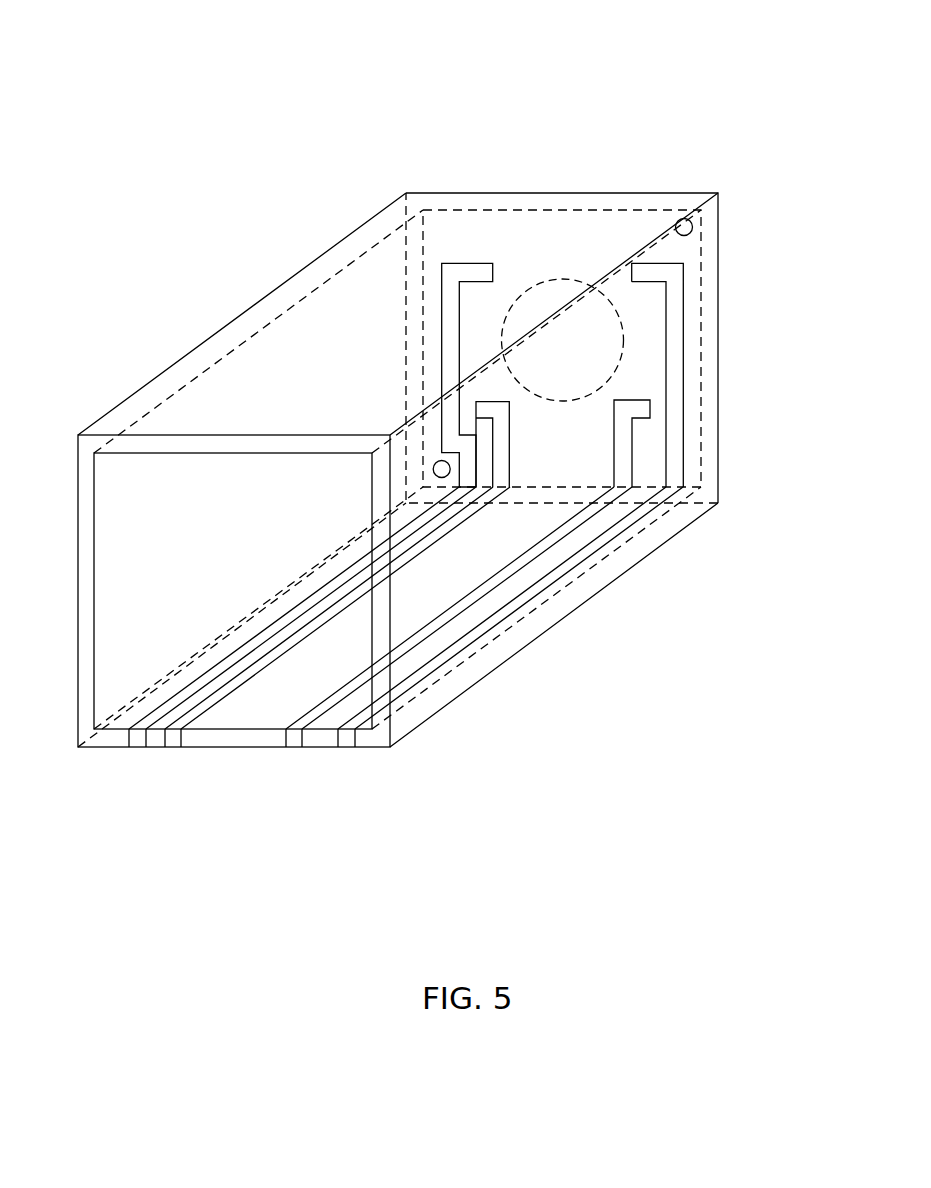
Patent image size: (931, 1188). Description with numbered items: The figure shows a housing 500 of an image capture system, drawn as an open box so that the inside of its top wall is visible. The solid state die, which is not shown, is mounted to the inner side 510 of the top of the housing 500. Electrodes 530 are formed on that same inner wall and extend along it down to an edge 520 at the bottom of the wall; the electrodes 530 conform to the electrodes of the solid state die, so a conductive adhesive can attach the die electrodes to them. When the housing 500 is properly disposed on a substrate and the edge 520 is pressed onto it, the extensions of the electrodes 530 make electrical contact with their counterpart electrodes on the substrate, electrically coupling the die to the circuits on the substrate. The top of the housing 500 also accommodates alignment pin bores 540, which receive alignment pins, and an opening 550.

The housing 500 is at (302, 92).
The inner side 510 is at (545, 238).
The edge 520 is at (222, 743).
The electrodes 530 is at (442, 273).
The alignment pin bores 540 is at (676, 224).
The opening 550 is at (573, 280).